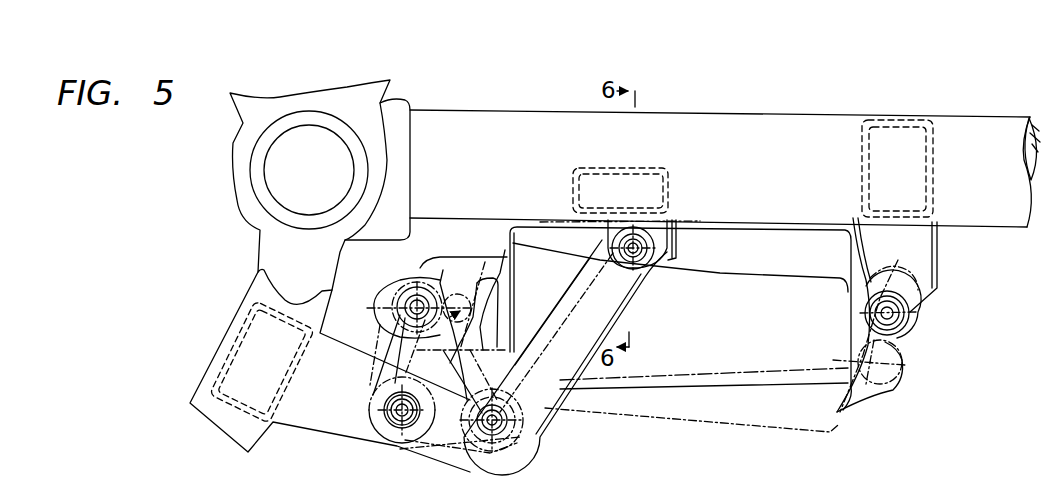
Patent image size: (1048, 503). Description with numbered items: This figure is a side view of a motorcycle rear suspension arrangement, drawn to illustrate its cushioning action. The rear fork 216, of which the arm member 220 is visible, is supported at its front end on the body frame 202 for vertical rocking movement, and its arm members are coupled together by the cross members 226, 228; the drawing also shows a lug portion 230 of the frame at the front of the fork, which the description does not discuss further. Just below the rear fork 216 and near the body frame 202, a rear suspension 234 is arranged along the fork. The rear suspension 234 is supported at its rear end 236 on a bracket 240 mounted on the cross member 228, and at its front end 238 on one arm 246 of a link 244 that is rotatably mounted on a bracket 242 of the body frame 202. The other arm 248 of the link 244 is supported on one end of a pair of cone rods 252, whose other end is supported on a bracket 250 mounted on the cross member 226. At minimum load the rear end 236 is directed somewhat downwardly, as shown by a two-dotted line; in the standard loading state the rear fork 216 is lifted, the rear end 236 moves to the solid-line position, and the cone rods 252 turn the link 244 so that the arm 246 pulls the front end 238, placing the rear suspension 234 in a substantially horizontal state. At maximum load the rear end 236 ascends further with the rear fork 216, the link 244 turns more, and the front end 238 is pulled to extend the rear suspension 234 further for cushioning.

The body frame 202 is at (232, 375).
The rear fork 216 is at (560, 111).
The arm member 220 is at (773, 121).
The cross member 226 is at (645, 168).
The cross member 228 is at (935, 152).
The head tube lug 230 is at (398, 107).
The rear suspension 234 is at (812, 396).
The rear end 236 is at (903, 330).
The front end 238 is at (443, 282).
The bracket 240 is at (928, 252).
The bracket 242 is at (333, 418).
The link 244 is at (447, 452).
The arm 246 is at (385, 334).
The arm 248 is at (505, 447).
The bracket 250 is at (676, 243).
The cone rods 252 is at (545, 408).